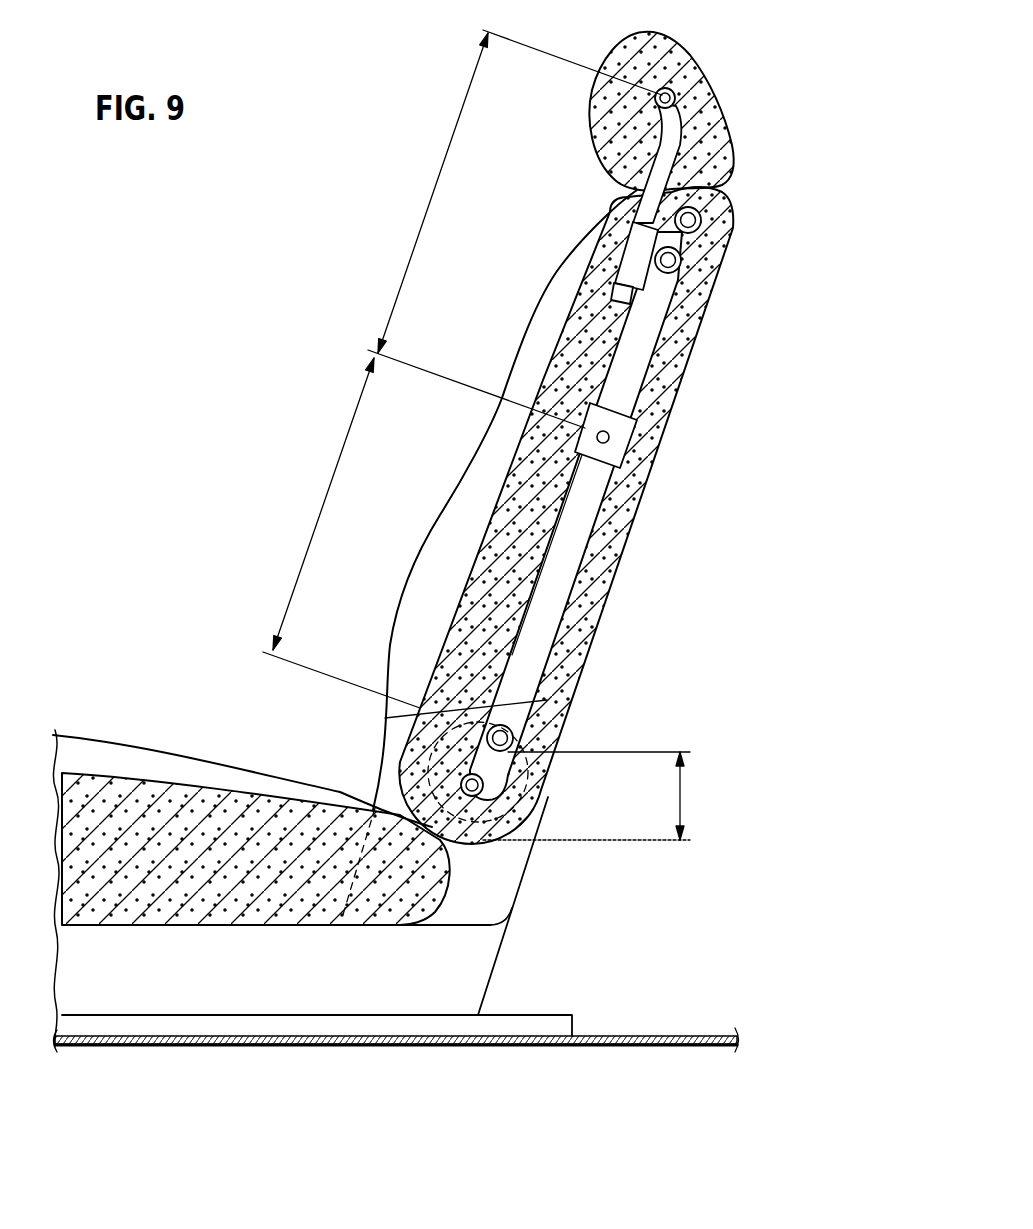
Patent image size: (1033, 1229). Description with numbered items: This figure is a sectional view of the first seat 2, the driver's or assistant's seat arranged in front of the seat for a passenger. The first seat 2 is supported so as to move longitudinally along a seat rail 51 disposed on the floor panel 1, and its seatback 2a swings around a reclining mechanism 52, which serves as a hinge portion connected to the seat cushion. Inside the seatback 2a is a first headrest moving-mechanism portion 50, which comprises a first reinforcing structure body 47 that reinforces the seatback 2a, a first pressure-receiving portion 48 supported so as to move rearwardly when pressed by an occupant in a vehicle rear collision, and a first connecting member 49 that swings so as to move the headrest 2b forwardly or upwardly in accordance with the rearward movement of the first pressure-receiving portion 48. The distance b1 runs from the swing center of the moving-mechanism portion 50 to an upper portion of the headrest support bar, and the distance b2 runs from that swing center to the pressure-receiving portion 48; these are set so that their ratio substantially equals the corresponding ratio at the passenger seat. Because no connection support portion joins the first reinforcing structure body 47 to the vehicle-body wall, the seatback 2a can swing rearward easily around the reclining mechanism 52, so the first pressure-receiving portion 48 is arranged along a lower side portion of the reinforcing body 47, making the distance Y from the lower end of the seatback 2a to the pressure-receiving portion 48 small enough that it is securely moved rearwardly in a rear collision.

The floor panel 1 is at (188, 1042).
The first seat 2 is at (512, 306).
The seatback 2a is at (512, 458).
The headrest 2b is at (590, 106).
The first reinforcing structure body 47 is at (703, 213).
The first pressure-receiving portion 48 is at (500, 737).
The first connecting member 49 is at (647, 338).
The first headrest moving-mechanism portion 50 is at (652, 401).
The seat rail 51 is at (401, 1022).
The reclining mechanism 52 is at (490, 838).
The distance b1 is at (434, 184).
The distance b2 is at (333, 478).
The distance Y is at (683, 792).